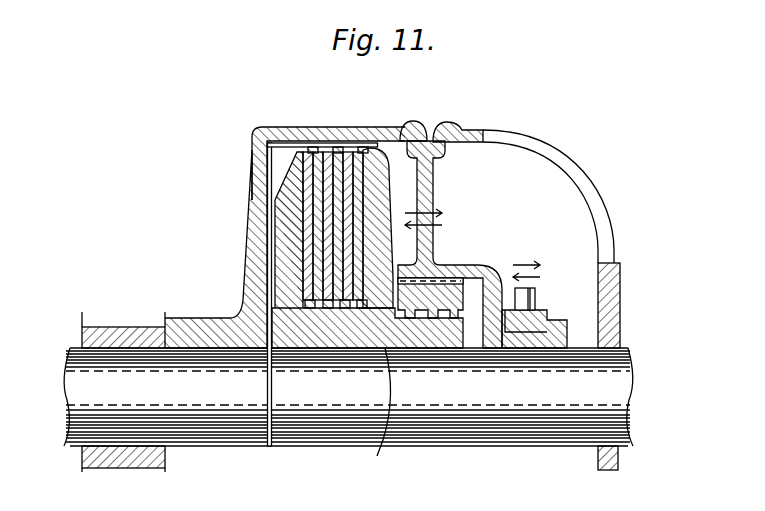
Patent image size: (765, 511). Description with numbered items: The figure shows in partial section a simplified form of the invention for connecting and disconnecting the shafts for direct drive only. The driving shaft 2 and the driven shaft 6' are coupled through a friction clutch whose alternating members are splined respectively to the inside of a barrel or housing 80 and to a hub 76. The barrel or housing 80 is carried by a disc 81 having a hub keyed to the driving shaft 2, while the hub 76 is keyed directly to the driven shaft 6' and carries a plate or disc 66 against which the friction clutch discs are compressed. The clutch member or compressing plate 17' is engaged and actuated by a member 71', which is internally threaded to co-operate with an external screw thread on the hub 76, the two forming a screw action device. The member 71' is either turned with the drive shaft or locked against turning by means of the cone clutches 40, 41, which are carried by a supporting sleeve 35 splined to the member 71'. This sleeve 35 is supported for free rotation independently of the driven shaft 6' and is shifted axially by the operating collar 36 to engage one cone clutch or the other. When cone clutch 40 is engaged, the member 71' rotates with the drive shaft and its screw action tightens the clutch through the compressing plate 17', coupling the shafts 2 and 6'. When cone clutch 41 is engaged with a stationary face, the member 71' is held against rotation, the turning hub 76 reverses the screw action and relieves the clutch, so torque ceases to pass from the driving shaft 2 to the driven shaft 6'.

The driving shaft 2 is at (104, 360).
The driven shaft 6' is at (348, 414).
The clutch member or compressing plate 17' is at (440, 219).
The supporting sleeve 35 is at (556, 327).
The operating collar 36 is at (540, 310).
The cone clutch 40 is at (421, 123).
The cone clutch 41 is at (452, 125).
The plate or disc 66 is at (268, 196).
The member of the screw action device 71' is at (444, 274).
The hub 76 is at (384, 446).
The barrel or housing 80 is at (299, 135).
The disc 81 is at (251, 258).